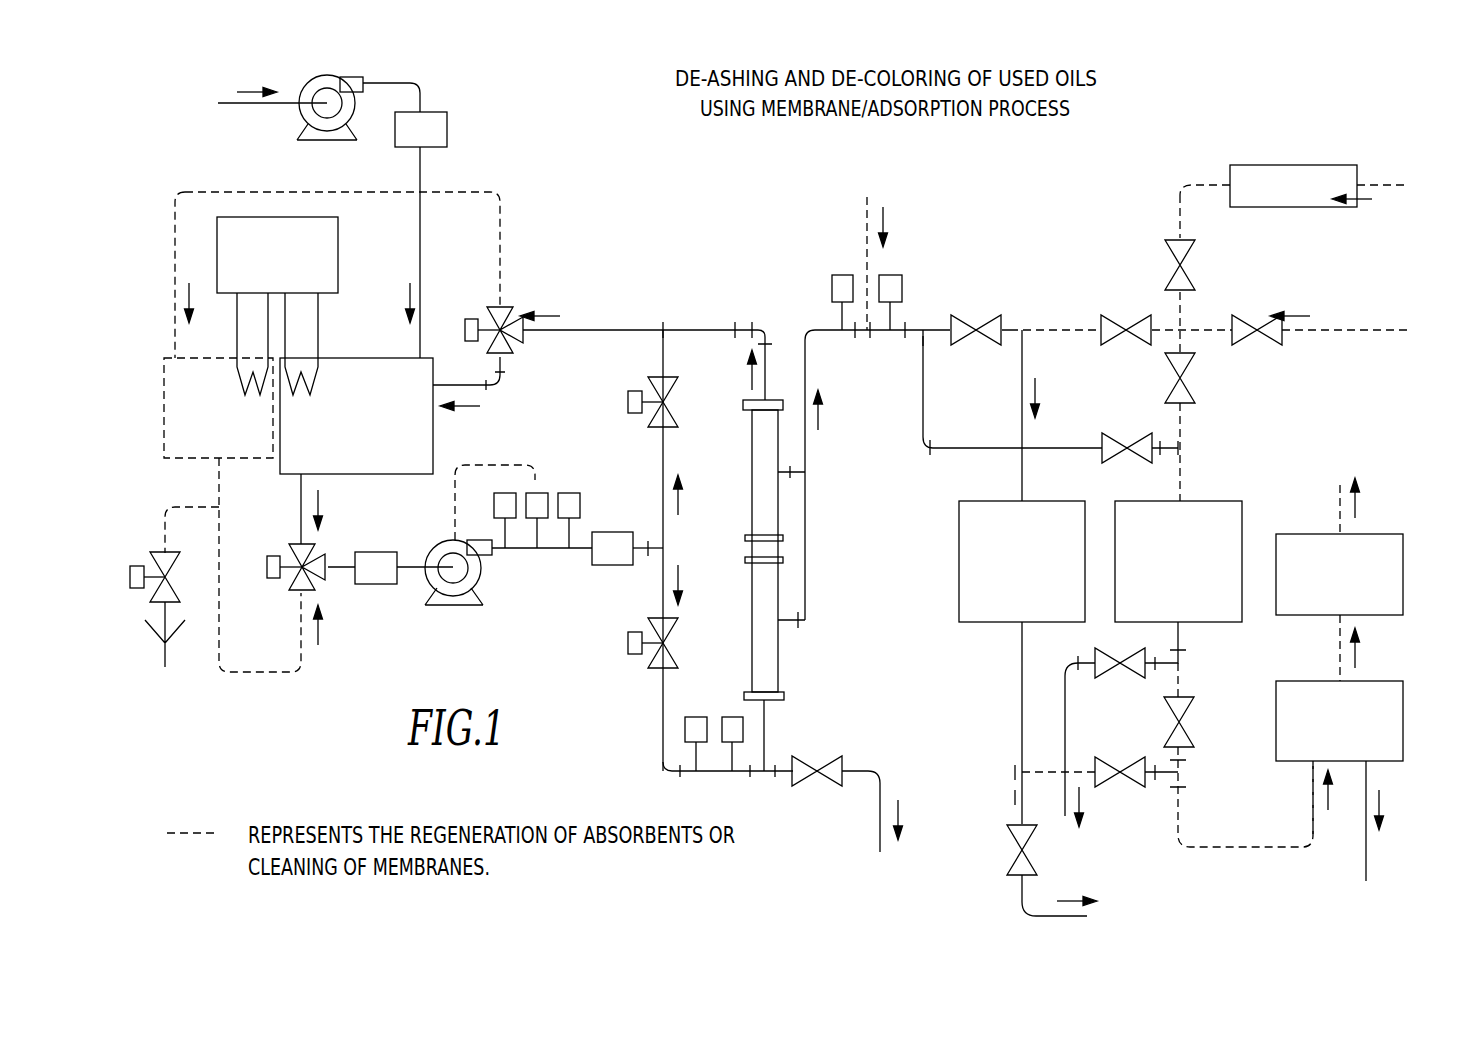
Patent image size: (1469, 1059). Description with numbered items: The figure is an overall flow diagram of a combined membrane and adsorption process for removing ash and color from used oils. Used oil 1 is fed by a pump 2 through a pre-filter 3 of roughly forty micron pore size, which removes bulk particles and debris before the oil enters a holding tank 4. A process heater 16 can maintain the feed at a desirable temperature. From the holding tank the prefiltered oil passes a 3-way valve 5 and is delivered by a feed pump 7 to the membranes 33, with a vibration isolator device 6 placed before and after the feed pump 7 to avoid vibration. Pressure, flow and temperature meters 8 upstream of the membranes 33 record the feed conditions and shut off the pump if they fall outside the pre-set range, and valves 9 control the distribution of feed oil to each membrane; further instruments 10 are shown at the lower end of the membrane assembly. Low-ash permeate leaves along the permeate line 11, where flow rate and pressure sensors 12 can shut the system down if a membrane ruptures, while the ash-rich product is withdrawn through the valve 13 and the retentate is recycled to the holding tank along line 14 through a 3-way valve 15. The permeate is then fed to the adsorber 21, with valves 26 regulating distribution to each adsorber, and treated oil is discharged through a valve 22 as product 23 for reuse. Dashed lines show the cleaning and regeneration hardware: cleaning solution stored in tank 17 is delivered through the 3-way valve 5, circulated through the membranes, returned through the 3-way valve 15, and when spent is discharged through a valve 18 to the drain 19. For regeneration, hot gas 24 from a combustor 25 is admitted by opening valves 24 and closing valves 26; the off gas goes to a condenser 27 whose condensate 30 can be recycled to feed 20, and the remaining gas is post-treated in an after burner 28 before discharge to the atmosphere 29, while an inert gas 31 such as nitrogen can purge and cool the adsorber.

The used oil 1 is at (229, 103).
The pump 2 is at (318, 78).
The pre-filter 3 is at (447, 125).
The holding tank 4 is at (348, 358).
The 3-way valve 5 is at (290, 544).
The vibration isolator device 6 is at (376, 552).
The feed pump 7 is at (478, 580).
The pressure, flow and temperature meters 8 is at (545, 548).
The valves 9 is at (630, 395).
The temperature and pressure instruments 10 is at (714, 715).
The permeate line 11 is at (806, 570).
The flow rate and pressure sensors 12 is at (865, 280).
The valve 13 is at (880, 832).
The line 14 is at (718, 330).
The 3-way valve 15 is at (505, 305).
The process heater 16 is at (338, 255).
The tank 17 is at (164, 395).
The valve 18 is at (152, 565).
The drain 19 is at (162, 660).
The feed 20 is at (865, 213).
The adsorber 21 is at (959, 565).
The valve 22 is at (1010, 828).
The product 23 is at (1065, 838).
The hot gas / valves 24 is at (1120, 315).
The combustor 25 is at (1288, 165).
The valves 26 is at (970, 318).
The condenser 27 is at (1403, 718).
The after burner 28 is at (1403, 555).
The discharge to the atmosphere 29 is at (1340, 492).
The condensate 30 is at (1366, 850).
The inert gas 31 is at (1395, 330).
The membranes 33 is at (752, 458).